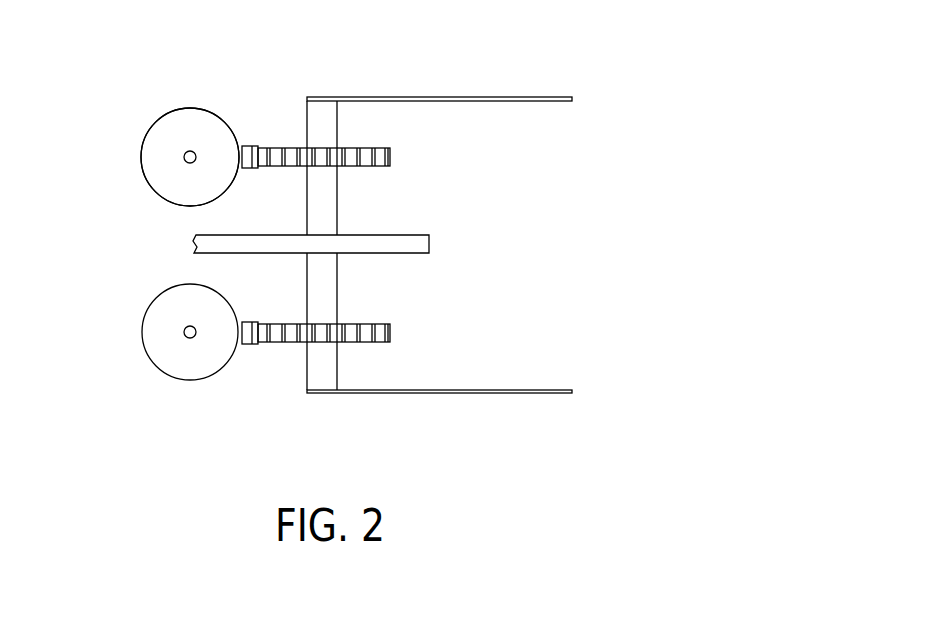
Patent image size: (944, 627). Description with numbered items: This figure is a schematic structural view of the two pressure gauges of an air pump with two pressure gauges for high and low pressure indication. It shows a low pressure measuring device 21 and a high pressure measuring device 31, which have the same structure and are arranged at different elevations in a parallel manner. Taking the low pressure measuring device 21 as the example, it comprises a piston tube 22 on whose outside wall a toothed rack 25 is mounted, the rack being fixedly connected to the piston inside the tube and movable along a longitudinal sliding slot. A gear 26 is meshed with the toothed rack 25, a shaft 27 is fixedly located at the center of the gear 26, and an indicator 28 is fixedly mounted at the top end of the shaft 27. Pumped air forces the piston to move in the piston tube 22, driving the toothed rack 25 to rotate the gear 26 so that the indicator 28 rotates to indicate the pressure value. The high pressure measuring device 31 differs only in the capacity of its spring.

The low pressure measuring device 21 is at (140, 165).
The piston tube 22 is at (193, 127).
The toothed rack 25 is at (255, 145).
The gear 26 is at (392, 155).
The shaft 27 is at (330, 120).
The indicator 28 is at (503, 96).
The high pressure measuring device 31 is at (152, 358).